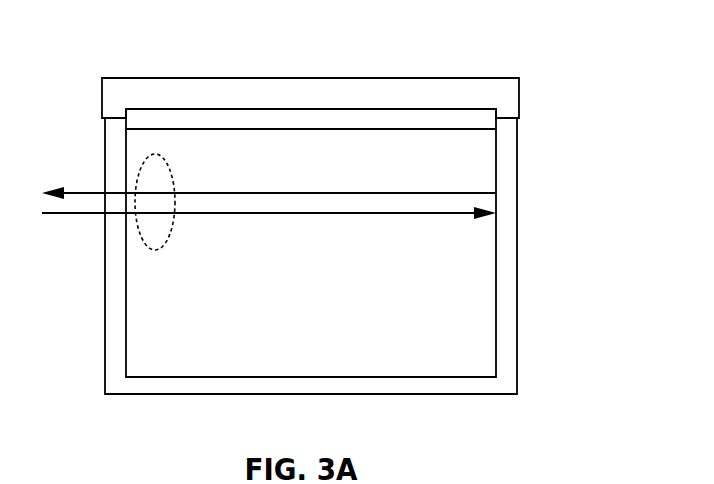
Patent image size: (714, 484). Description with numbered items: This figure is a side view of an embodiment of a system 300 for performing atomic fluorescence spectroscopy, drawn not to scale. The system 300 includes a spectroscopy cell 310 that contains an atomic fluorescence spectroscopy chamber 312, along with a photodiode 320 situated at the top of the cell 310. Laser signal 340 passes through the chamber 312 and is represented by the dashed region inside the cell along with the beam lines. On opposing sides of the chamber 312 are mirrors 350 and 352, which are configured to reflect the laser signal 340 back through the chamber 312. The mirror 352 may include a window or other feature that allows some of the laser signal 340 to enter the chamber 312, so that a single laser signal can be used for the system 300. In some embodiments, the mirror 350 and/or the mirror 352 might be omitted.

The system 300 is at (292, 42).
The spectroscopy cell 310 is at (464, 406).
The chamber 312 is at (292, 329).
The photodiode 320 is at (252, 108).
The laser signal 340 is at (150, 250).
The mirror 350 is at (517, 213).
The mirror 352 is at (106, 325).